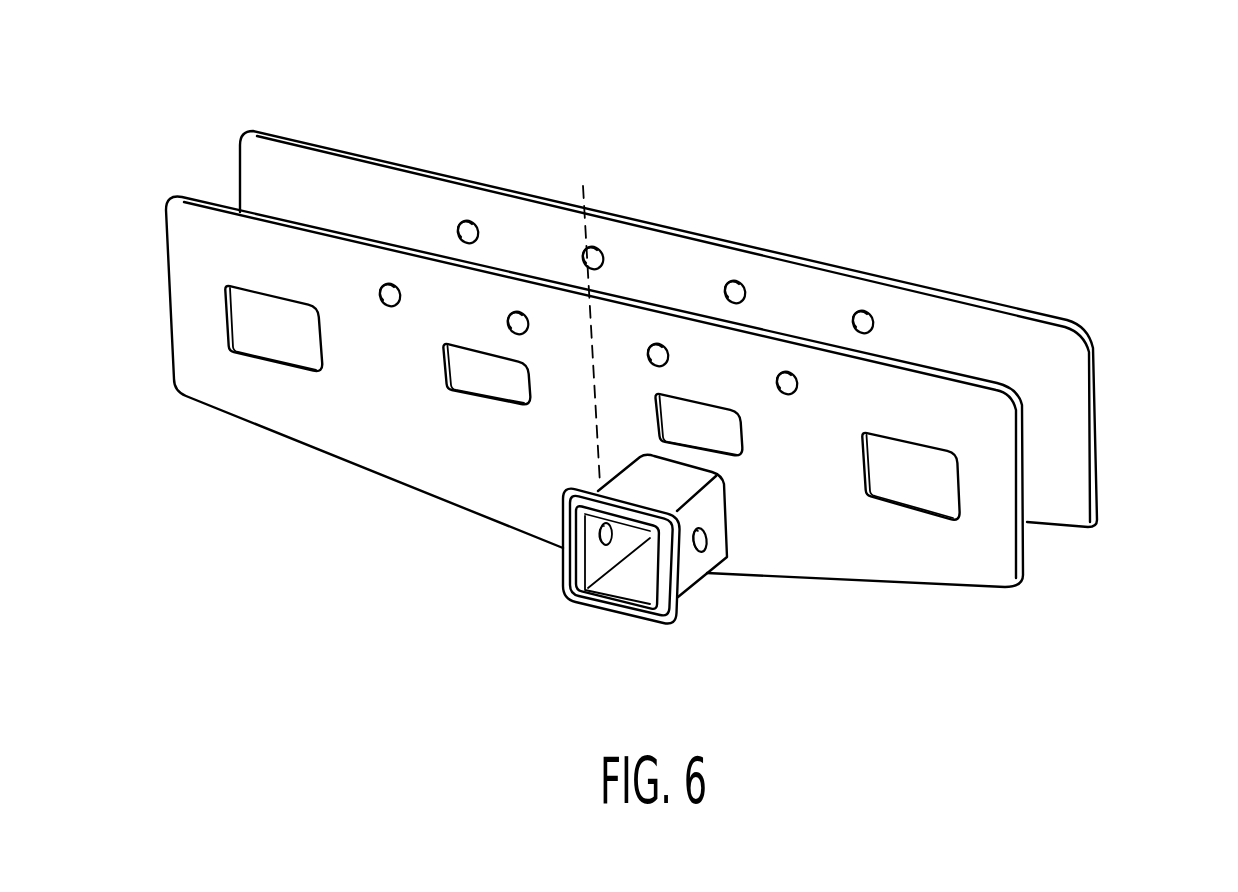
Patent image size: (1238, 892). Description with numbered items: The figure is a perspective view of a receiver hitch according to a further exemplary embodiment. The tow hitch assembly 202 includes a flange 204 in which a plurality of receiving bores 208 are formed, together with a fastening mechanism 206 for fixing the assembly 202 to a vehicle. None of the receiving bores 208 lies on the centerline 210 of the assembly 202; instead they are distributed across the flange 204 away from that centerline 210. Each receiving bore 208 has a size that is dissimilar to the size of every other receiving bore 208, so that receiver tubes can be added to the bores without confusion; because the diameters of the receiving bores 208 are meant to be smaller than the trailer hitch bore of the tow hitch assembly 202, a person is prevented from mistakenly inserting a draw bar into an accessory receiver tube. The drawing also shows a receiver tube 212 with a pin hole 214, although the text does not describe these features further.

The assembly 202 is at (1140, 246).
The flange 204 is at (1027, 552).
The fastening mechanism 206 is at (597, 200).
The receiving bores 208 is at (225, 304).
The centerline 210 is at (620, 190).
The receiver tube 212 is at (673, 615).
The pin hole 214 is at (705, 576).